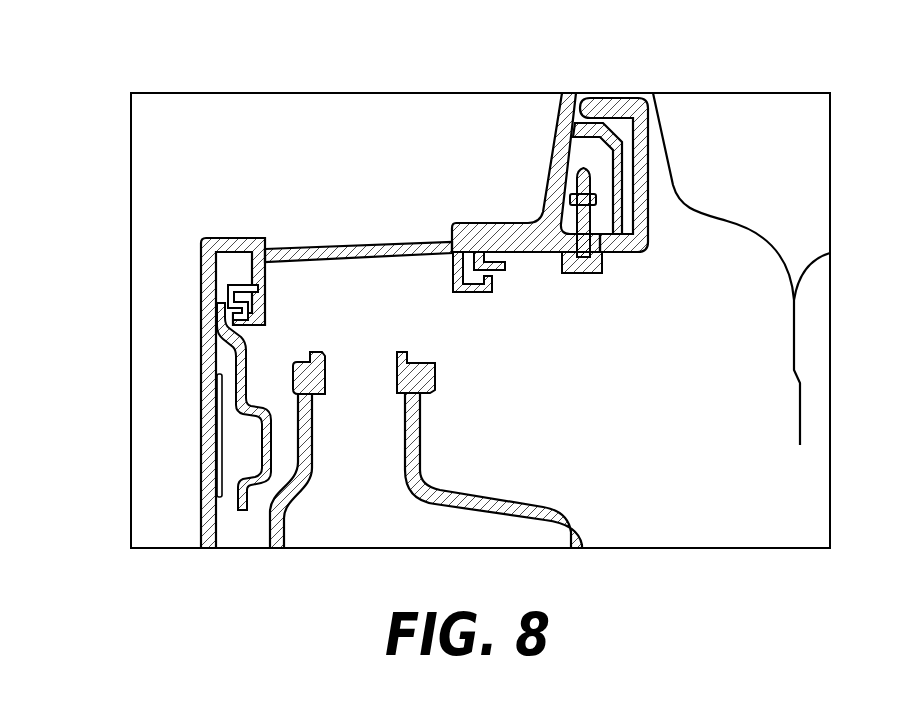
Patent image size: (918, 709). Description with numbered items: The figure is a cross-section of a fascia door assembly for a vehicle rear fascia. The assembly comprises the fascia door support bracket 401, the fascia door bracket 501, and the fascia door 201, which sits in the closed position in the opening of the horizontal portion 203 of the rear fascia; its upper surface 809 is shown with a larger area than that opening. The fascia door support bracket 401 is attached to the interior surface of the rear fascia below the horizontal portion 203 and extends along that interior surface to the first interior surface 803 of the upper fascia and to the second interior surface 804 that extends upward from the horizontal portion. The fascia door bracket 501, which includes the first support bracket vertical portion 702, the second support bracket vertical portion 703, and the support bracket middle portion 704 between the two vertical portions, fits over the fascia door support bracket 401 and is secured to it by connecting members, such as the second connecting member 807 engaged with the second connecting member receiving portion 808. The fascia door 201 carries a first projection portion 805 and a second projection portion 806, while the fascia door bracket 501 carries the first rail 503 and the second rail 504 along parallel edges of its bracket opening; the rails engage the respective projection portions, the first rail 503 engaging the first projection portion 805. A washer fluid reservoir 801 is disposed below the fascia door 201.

The horizontal portion 203 is at (223, 222).
The upper surface 809 is at (307, 250).
The fascia door 201 is at (360, 217).
The first rail 503 is at (483, 252).
The first projection portion 805 is at (470, 300).
The second connecting member receiving portion 808 is at (567, 217).
The support bracket middle portion 704 is at (522, 250).
The fascia door support bracket 401 is at (617, 141).
The second interior surface 804 is at (617, 141).
The fascia door bracket 501 is at (652, 253).
The second connecting member 807 is at (602, 278).
The first support bracket vertical portion 702 is at (640, 192).
The second rail 504 is at (227, 297).
The second support bracket vertical portion 703 is at (235, 372).
The first interior surface 803 is at (276, 406).
The second projection portion 806 is at (274, 325).
The washer fluid reservoir 801 is at (580, 533).